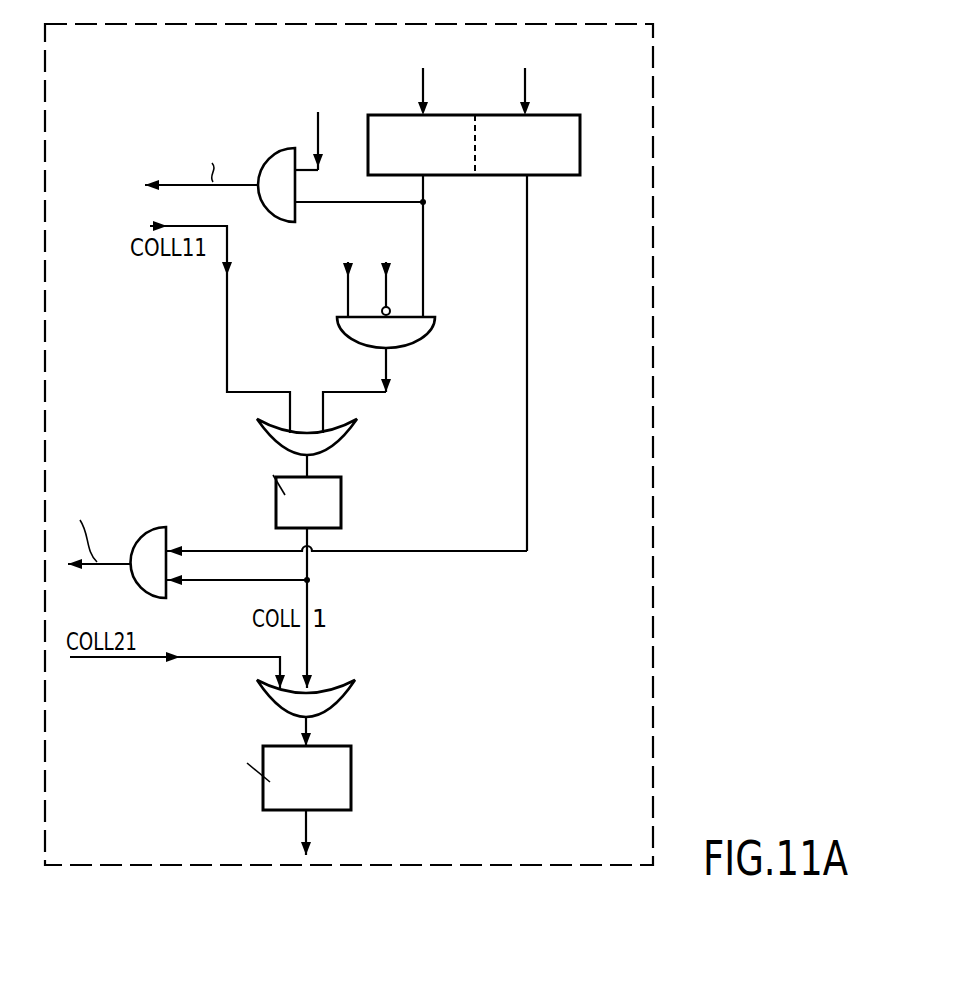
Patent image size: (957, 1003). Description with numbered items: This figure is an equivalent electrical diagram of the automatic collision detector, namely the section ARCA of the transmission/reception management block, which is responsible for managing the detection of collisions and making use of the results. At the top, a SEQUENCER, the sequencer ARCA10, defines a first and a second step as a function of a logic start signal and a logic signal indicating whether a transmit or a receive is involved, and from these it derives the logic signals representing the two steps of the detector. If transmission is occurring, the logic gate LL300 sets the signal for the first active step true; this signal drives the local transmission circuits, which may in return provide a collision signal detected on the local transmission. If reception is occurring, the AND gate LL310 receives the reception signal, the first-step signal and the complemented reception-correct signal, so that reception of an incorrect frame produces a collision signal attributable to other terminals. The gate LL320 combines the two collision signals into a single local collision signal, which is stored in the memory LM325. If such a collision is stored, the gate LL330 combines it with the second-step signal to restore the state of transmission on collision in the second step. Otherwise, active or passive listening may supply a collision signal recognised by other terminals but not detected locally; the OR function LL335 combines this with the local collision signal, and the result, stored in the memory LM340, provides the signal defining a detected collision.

The collision detection management block ARCA is at (654, 258).
The sequencer SEQUENCER is at (468, 122).
The sequencer ARCA10 is at (368, 114).
The logic gate LL300 is at (272, 222).
The AND gate LL310 is at (436, 340).
The AND gate LL320 is at (350, 438).
The memory LM325 is at (343, 508).
The gate LL330 is at (157, 526).
The OR function LL335 is at (345, 702).
The memory LM340 is at (352, 780).